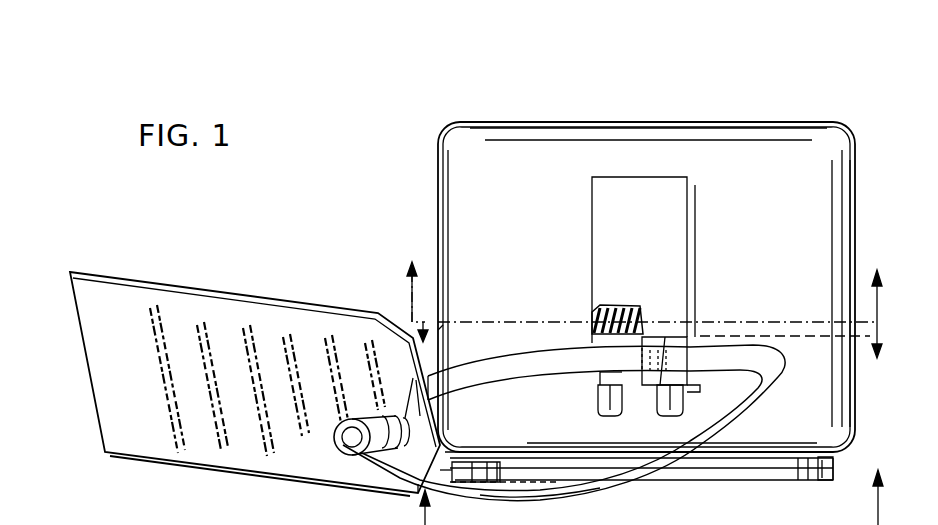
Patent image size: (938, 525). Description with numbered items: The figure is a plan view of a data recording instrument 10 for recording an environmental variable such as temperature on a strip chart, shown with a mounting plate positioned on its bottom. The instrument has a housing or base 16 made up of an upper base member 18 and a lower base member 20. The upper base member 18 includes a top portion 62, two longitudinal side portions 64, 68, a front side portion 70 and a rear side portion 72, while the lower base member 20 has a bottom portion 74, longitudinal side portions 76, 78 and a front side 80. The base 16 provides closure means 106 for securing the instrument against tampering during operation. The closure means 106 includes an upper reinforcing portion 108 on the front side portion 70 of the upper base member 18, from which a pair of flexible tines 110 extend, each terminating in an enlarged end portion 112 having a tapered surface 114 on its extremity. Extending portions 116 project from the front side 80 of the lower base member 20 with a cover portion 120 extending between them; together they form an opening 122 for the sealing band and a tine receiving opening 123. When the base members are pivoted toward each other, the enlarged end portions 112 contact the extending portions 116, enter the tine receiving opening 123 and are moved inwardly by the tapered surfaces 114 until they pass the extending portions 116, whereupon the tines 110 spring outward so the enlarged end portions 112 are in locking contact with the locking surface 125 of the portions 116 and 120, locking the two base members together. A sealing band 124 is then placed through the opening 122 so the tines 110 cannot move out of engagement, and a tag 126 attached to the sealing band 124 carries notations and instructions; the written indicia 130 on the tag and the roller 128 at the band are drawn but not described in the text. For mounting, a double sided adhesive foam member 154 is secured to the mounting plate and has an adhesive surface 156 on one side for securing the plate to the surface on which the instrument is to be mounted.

The data recording instrument 10 is at (418, 80).
The housing or base 16 is at (430, 147).
The upper base member 18 is at (438, 172).
The longitudinal side portion 68 is at (438, 208).
The top portion 62 is at (650, 123).
The front side portion 70 is at (725, 166).
The longitudinal side portion 64 is at (848, 177).
The upper reinforcing portion 108 is at (668, 232).
The closure means 106 is at (702, 334).
The opening 122 is at (590, 338).
The tine receiving opening 123 is at (645, 338).
The extending portions 116 is at (598, 372).
The enlarged end portions 112 is at (597, 388).
The tapered surfaces 114 is at (600, 410).
The flexible tines 110 is at (607, 419).
The locking surface 125 is at (645, 412).
The cover portion 120 is at (682, 396).
The front side 80 is at (704, 464).
The sealing band 124 is at (571, 489).
The tag 126 is at (97, 361).
The tag indicia 130 is at (260, 490).
The roller 128 is at (352, 419).
The bottom portion 74 is at (723, 468).
The rear side portion 72 is at (760, 468).
The adhesive surface 156 is at (787, 486).
The double sided adhesive foam member 154 is at (828, 480).
The longitudinal side portion 76 is at (853, 400).
The lower base member 20 is at (854, 426).
The longitudinal side portion 78 is at (440, 328).